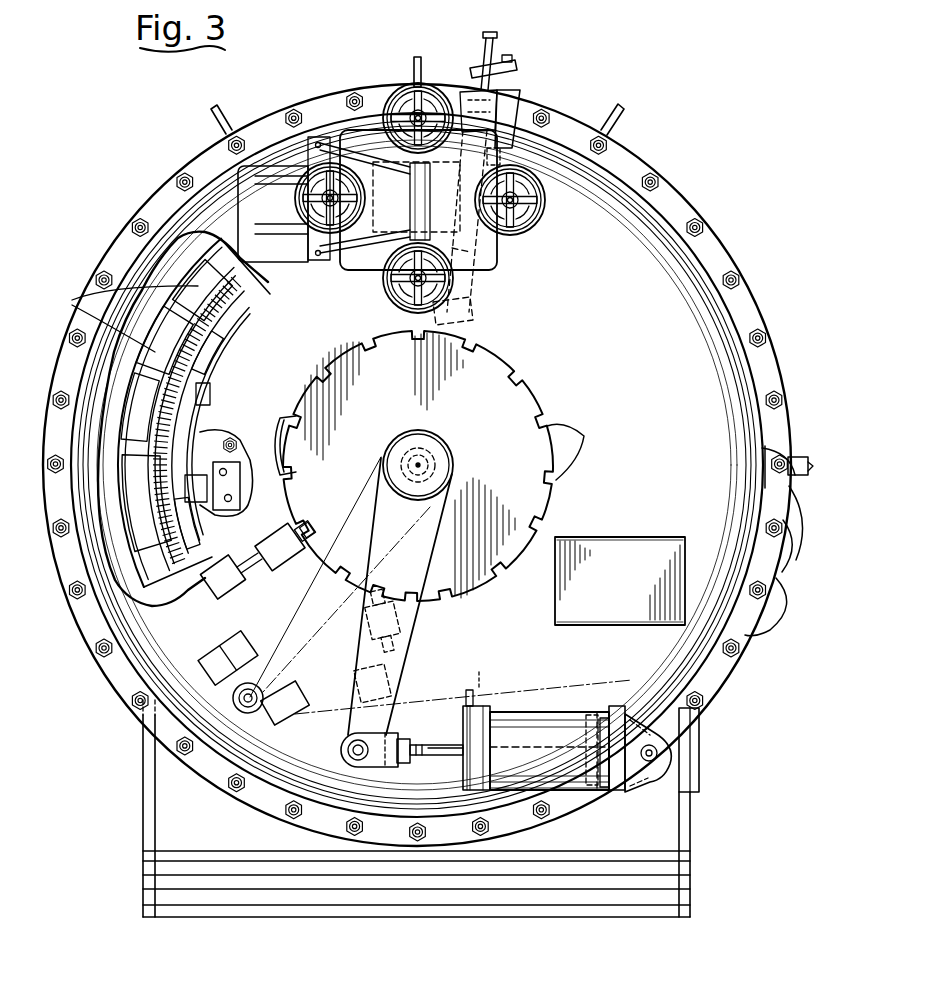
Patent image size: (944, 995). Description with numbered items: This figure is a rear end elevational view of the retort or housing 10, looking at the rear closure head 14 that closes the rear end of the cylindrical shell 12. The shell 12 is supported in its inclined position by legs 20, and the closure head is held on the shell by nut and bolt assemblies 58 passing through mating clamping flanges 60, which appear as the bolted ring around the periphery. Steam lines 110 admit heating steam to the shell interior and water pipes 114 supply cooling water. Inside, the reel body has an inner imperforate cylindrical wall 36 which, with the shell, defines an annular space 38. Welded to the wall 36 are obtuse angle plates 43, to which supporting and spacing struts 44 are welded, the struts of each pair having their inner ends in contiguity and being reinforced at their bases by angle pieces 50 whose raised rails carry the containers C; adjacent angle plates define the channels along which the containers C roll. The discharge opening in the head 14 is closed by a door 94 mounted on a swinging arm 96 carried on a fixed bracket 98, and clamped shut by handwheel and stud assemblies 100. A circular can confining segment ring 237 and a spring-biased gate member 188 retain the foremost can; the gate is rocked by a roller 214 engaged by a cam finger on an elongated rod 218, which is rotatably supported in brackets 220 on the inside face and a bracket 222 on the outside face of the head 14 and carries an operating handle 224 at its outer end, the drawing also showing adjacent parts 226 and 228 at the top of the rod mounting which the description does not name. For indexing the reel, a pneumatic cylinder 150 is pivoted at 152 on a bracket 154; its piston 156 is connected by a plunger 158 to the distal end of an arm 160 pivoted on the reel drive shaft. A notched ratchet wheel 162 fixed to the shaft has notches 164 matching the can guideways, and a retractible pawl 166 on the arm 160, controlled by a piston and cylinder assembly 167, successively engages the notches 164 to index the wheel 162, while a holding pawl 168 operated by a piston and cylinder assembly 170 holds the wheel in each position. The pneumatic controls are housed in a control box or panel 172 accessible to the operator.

The retort or housing 10 is at (652, 157).
The cylindrical shell 12 is at (658, 215).
The rear closure head 14 is at (648, 242).
The legs 20 is at (147, 893).
The inner cylindrical inside wall 36 is at (241, 481).
The cylindrical annulus or space 38 is at (167, 266).
The obtuse angle plates 43 is at (224, 357).
The supporting and spacing struts 44 is at (157, 424).
The angle pieces 50 is at (226, 343).
The nut and bolt assemblies 58 is at (788, 523).
The clamping flanges 60 is at (88, 627).
The door 94 is at (502, 250).
The swinging arm 96 is at (330, 256).
The fixed bracket 98 is at (276, 248).
The handwheel and stud assemblies 100 is at (395, 100).
The steam lines 110 is at (797, 449).
The water pipes 114 is at (230, 128).
The pneumatic cylinder 150 is at (540, 749).
The pivot 152 is at (650, 763).
The bracket 154 is at (673, 777).
The piston 156 is at (590, 715).
The plunger 158 is at (434, 746).
The arm 160 is at (306, 704).
The notched ratchet wheel 162 is at (523, 406).
The notches 164 is at (282, 440).
The retractible pawl 166 is at (400, 620).
The piston and cylinder assembly 167 is at (395, 668).
The holding pawl 168 is at (307, 524).
The piston and cylinder assembly 170 is at (226, 589).
The control box or panel 172 is at (633, 590).
The spring-biased gate member 188 is at (211, 396).
The roller 214 is at (230, 438).
The elongated rod 218 is at (494, 151).
The brackets 220 is at (470, 318).
The bracket 222 is at (513, 115).
The operating handle 224 is at (478, 88).
The screw head 226 is at (498, 42).
The plate 228 is at (474, 90).
The can confining segment ring 237 is at (182, 361).
The containers C is at (126, 319).